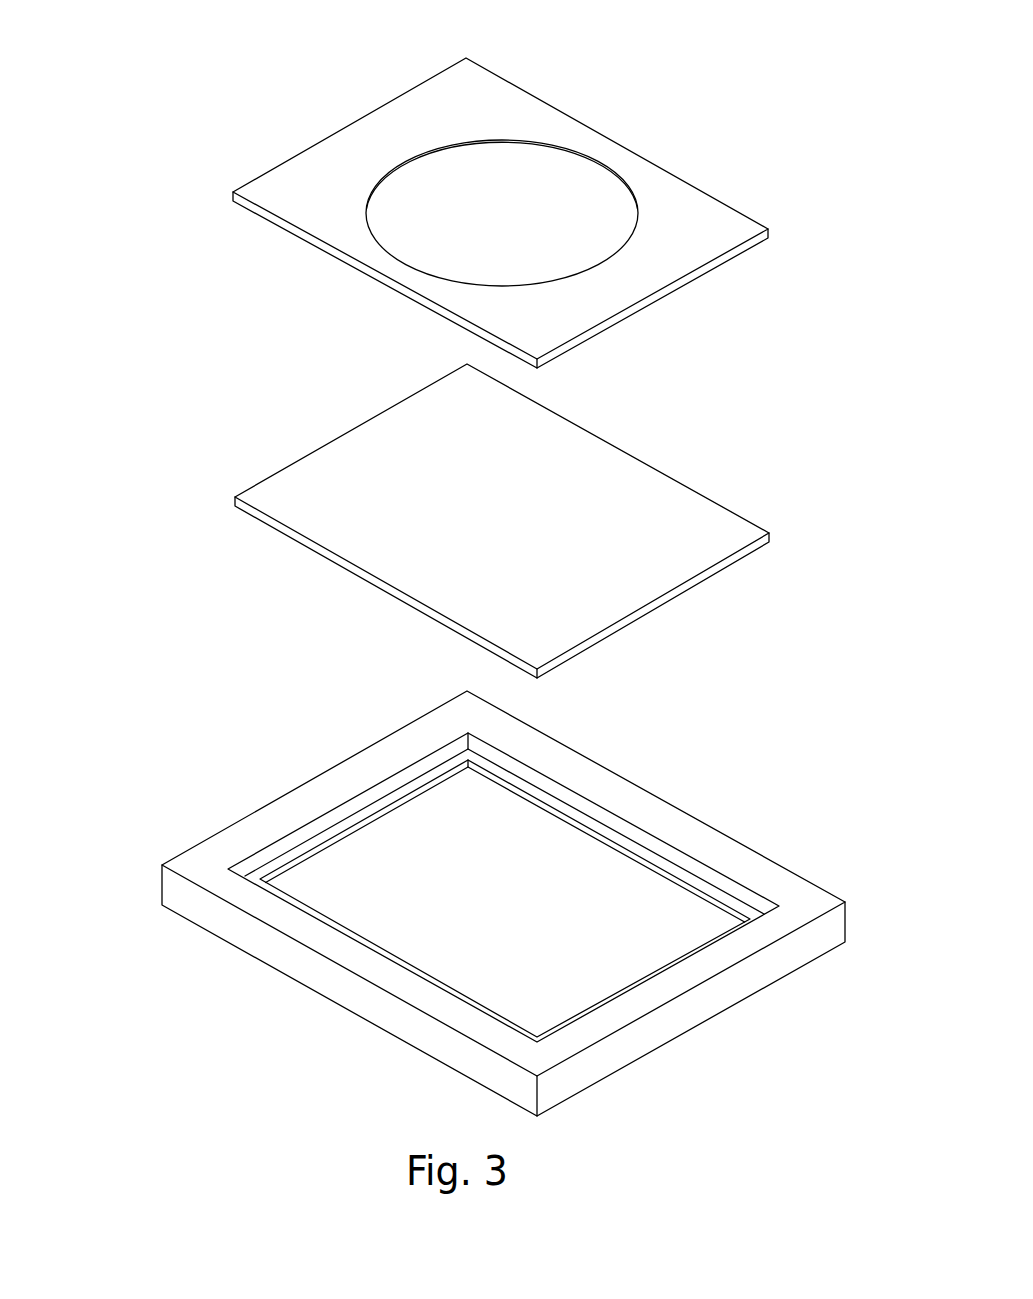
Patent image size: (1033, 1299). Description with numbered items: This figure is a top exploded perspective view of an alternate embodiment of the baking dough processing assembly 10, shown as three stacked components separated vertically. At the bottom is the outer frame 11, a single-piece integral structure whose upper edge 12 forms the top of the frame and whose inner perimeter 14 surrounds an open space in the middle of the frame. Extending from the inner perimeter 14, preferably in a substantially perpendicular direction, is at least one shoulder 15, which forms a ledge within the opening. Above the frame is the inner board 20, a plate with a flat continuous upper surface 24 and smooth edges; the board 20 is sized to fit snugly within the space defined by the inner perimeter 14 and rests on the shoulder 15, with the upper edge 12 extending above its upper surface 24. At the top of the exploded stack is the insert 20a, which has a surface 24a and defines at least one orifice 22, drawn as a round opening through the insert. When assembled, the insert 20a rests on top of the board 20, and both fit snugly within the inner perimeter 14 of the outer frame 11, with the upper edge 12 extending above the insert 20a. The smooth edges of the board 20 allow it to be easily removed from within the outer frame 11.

The baking dough processing assembly 10 is at (108, 572).
The outer frame 11 is at (503, 879).
The upper edge 12 is at (643, 812).
The inner perimeter 14 is at (555, 748).
The shoulder 15 is at (562, 803).
The inner board 20 is at (535, 521).
The upper surface 24 is at (578, 465).
The insert 20a is at (527, 189).
The orifice 22 is at (553, 187).
The surface 24a is at (482, 107).